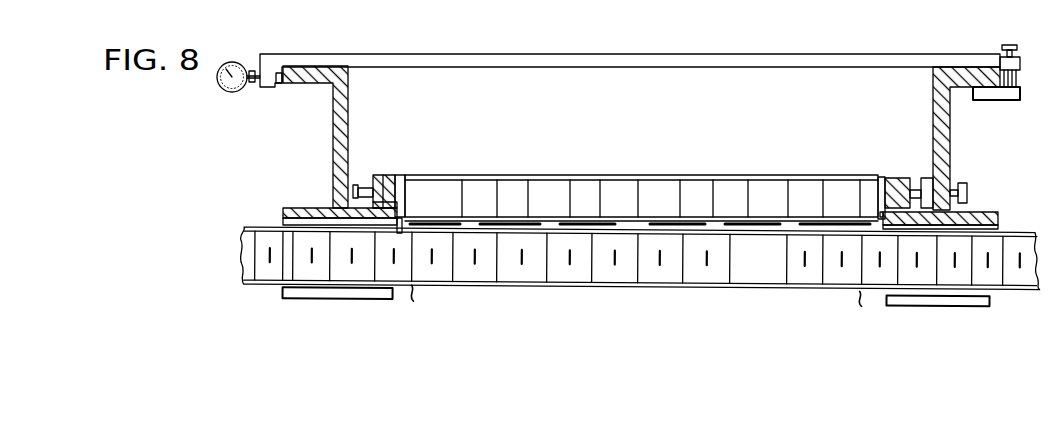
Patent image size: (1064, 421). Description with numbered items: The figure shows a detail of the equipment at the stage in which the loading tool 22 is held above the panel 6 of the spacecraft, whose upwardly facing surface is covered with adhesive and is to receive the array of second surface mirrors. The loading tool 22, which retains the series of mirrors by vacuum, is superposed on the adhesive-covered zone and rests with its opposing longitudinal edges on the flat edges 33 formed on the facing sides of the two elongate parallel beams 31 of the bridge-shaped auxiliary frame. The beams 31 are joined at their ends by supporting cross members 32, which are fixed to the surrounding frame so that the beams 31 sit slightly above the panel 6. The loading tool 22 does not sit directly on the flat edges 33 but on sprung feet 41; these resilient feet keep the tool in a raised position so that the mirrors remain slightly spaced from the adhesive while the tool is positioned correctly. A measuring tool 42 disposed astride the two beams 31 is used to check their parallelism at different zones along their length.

The measuring tool 42 is at (345, 54).
The supporting cross member 32 is at (333, 125).
The elongate parallel beam 31 is at (946, 127).
The sprung feet 41 is at (380, 174).
The loading tool 22 is at (695, 177).
The flat edge 33 is at (917, 212).
The panel 6 is at (990, 248).